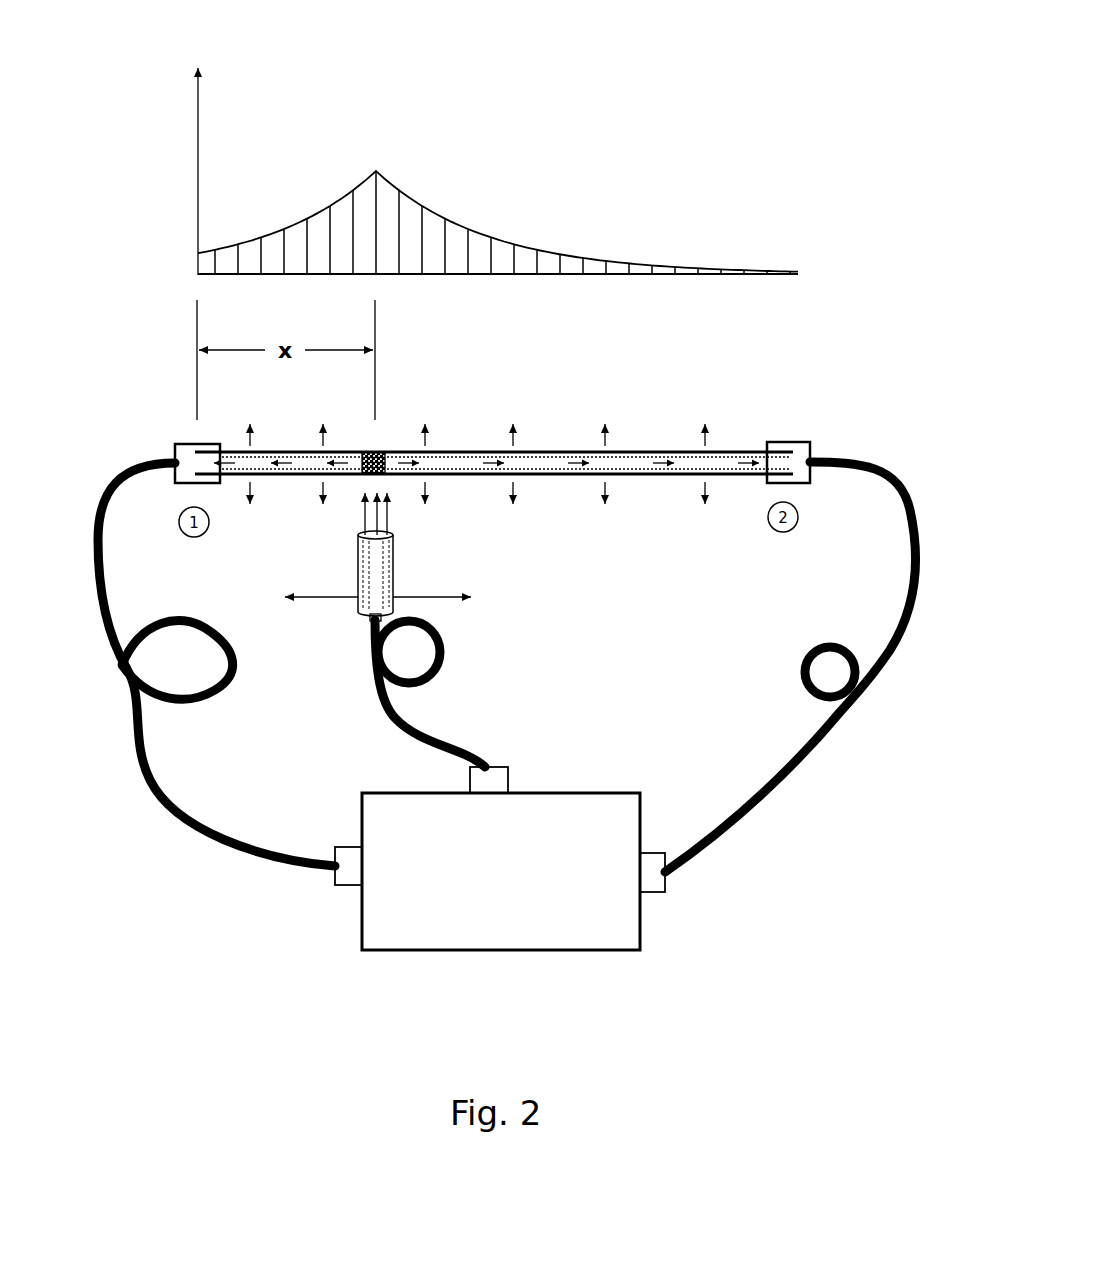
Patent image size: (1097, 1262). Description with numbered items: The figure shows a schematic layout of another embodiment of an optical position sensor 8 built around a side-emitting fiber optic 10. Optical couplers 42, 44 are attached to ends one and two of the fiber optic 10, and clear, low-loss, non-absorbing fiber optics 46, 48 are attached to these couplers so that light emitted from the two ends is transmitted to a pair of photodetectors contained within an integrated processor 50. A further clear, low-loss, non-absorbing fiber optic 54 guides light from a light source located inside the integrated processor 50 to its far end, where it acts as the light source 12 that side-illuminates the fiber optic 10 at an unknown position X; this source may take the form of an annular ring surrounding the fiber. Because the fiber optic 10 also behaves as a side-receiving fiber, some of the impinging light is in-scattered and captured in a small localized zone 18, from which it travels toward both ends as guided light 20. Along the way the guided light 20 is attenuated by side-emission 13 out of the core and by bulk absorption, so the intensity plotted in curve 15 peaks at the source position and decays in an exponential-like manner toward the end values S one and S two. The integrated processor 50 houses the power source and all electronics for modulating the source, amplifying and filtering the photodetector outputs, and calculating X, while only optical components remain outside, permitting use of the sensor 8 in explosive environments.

The side-emitting fiber optic position sensor 8 is at (851, 82).
The side-emitting fiber optic 10 is at (547, 443).
The light source 12 is at (402, 572).
The side-emission 13 is at (470, 468).
The curve 15 is at (463, 217).
The localized zone 18 is at (380, 445).
The guided light 20 is at (670, 475).
The optical coupler 42 is at (192, 442).
The optical coupler 44 is at (790, 441).
The fiber optic 46 is at (168, 784).
The fiber optic 48 is at (777, 760).
The integrated processor 50 is at (647, 938).
The fiber optic 54 is at (465, 735).